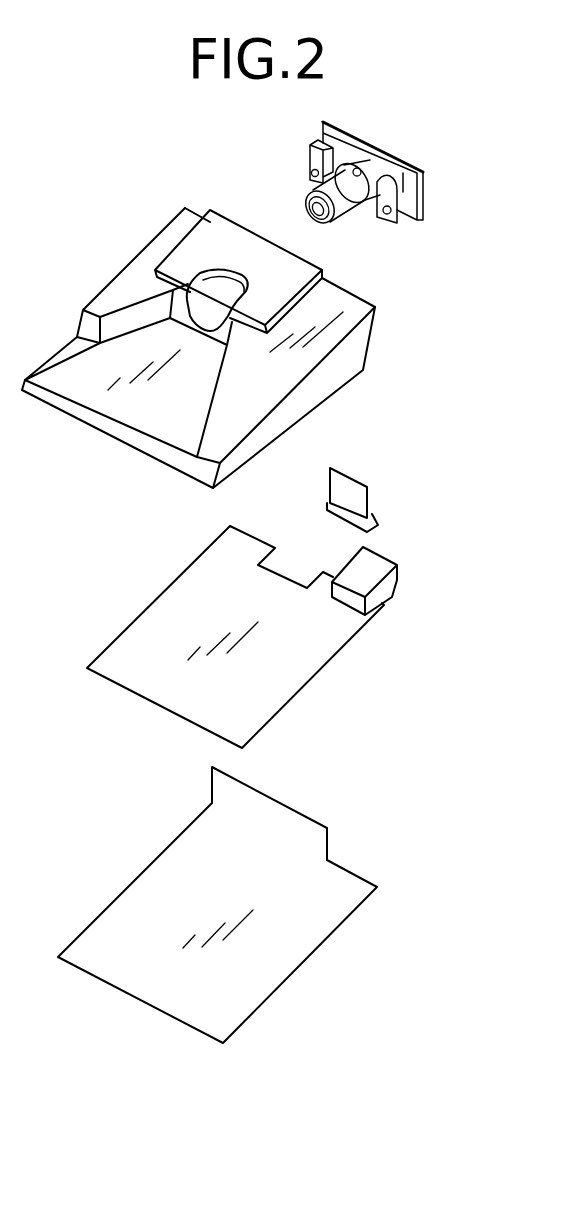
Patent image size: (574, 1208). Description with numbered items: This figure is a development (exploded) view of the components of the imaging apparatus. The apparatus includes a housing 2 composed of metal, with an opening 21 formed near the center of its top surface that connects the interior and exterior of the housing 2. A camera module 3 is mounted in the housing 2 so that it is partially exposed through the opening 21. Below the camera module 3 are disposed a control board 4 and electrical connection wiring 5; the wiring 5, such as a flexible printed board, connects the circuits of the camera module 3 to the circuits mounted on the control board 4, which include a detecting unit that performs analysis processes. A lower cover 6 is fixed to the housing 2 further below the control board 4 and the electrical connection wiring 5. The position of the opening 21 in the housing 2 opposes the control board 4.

The housing 2 is at (358, 347).
The opening 21 is at (220, 270).
The camera module 3 is at (423, 189).
The control board 4 is at (317, 643).
The electrical connection wiring 5 is at (360, 482).
The lower cover 6 is at (323, 917).